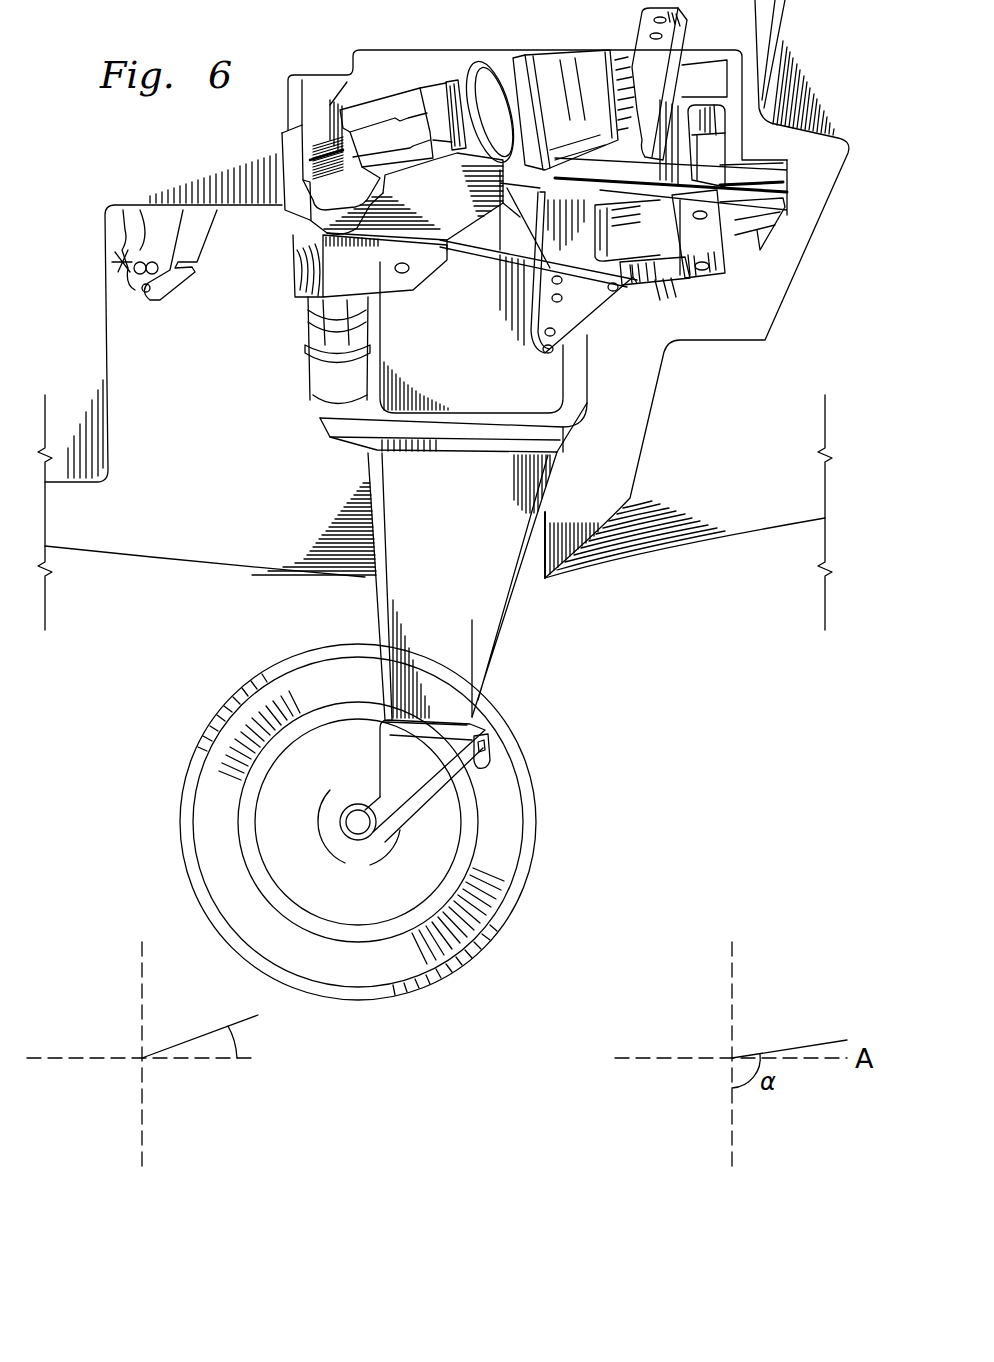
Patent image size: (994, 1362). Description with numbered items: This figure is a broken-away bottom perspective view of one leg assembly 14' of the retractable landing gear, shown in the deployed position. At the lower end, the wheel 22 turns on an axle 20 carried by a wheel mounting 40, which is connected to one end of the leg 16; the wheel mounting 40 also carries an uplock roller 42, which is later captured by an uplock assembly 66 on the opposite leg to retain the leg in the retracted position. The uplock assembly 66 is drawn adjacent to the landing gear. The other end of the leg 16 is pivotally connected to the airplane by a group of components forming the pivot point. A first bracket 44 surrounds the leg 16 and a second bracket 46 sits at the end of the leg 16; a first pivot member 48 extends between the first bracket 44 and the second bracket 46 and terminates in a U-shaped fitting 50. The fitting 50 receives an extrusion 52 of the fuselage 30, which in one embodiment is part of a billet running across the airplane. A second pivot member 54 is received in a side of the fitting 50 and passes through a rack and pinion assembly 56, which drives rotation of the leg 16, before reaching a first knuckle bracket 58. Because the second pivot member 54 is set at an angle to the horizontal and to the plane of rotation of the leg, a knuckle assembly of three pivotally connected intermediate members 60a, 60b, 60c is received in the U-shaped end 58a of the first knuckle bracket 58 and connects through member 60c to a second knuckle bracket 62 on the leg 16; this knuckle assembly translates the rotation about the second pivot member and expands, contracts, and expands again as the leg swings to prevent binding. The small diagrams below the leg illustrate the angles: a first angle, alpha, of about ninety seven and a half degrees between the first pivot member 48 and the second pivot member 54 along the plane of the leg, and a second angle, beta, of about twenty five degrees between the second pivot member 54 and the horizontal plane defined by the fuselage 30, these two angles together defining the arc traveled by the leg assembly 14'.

The leg assembly 14' is at (521, 668).
The leg 16 is at (478, 354).
The axle 20 is at (352, 828).
The wheel 22 is at (538, 825).
The fuselage 30 is at (76, 1055).
The wheel mounting 40 is at (422, 769).
The uplock roller 42 is at (480, 770).
The first bracket 44 is at (493, 420).
The second bracket 46 is at (428, 272).
The first pivot member 48 is at (318, 363).
The U-shaped fitting 50 is at (283, 145).
The extrusion 52 is at (320, 82).
The second pivot member 54 is at (428, 88).
The rack and pinion assembly 56 is at (560, 66).
The first knuckle bracket 58 is at (645, 25).
The U-shaped end 58a is at (740, 132).
The intermediate member 60a is at (675, 188).
The intermediate member 60b is at (722, 262).
The intermediate member 60c is at (674, 280).
The second knuckle bracket 62 is at (596, 325).
The uplock assembly 66 is at (153, 296).